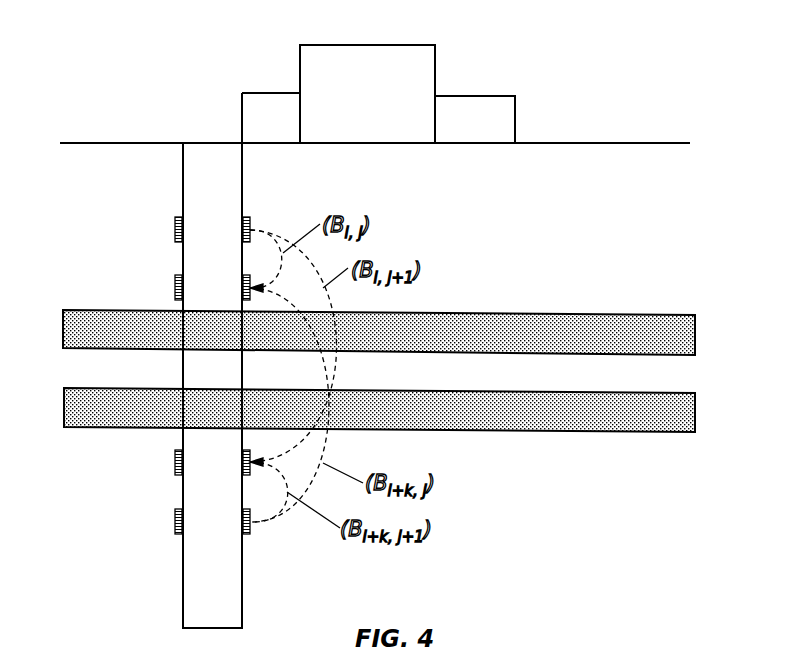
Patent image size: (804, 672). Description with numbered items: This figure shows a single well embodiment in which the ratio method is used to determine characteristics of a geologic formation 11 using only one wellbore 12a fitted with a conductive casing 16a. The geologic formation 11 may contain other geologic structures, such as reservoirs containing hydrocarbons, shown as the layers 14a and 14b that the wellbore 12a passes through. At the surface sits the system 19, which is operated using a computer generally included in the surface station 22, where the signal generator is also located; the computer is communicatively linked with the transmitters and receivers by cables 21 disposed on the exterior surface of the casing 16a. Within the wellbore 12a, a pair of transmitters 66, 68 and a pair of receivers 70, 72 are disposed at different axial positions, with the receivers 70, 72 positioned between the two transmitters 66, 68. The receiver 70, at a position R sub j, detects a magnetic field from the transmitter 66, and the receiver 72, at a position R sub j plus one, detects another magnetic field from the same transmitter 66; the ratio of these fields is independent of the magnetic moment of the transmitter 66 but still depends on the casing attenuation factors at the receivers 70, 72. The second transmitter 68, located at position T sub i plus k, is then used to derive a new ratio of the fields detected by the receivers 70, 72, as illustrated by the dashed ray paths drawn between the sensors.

The geologic formation 11 is at (518, 221).
The wellbore 12a is at (231, 186).
The reservoir 14a is at (522, 347).
The reservoir 14b is at (522, 426).
The conductive casing 16a is at (271, 360).
The system 19 is at (476, 86).
The cables 21 is at (380, 117).
The surface station 22 is at (381, 136).
The transmitter 66 is at (170, 217).
The second transmitter 68 is at (150, 512).
The receiver 70 is at (169, 277).
The receiver 72 is at (149, 455).